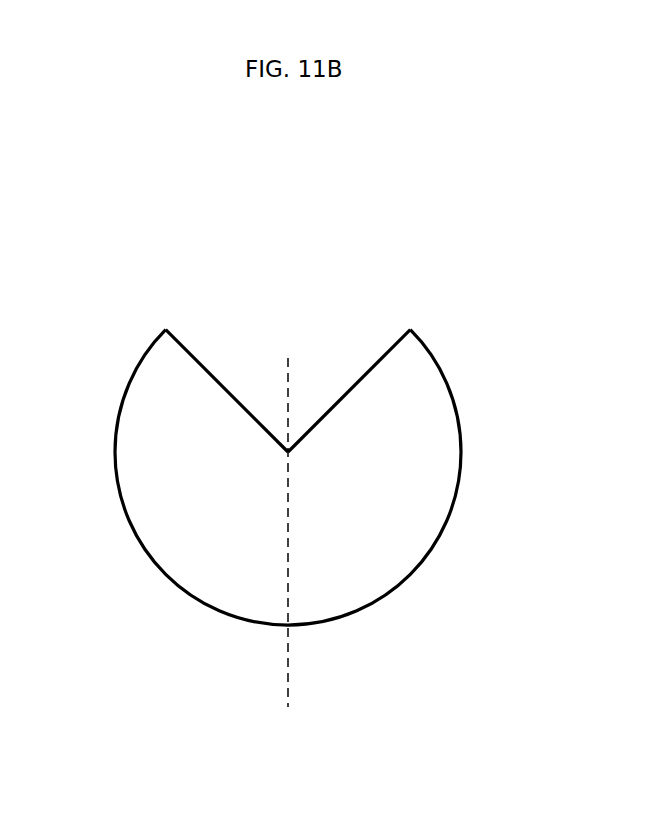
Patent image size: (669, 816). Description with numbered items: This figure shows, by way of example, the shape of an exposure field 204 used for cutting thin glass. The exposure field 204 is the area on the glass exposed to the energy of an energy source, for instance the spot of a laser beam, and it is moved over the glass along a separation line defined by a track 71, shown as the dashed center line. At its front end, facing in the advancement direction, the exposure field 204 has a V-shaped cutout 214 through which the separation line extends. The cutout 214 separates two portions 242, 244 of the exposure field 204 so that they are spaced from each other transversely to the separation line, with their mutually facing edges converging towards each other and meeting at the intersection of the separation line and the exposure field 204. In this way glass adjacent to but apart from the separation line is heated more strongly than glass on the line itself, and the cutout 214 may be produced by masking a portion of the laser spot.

The exposure field 204 is at (462, 472).
The portion of the exposure field 242 is at (165, 331).
The portion of the exposure field 244 is at (411, 331).
The cutout 214 is at (302, 392).
The track 71 is at (287, 400).